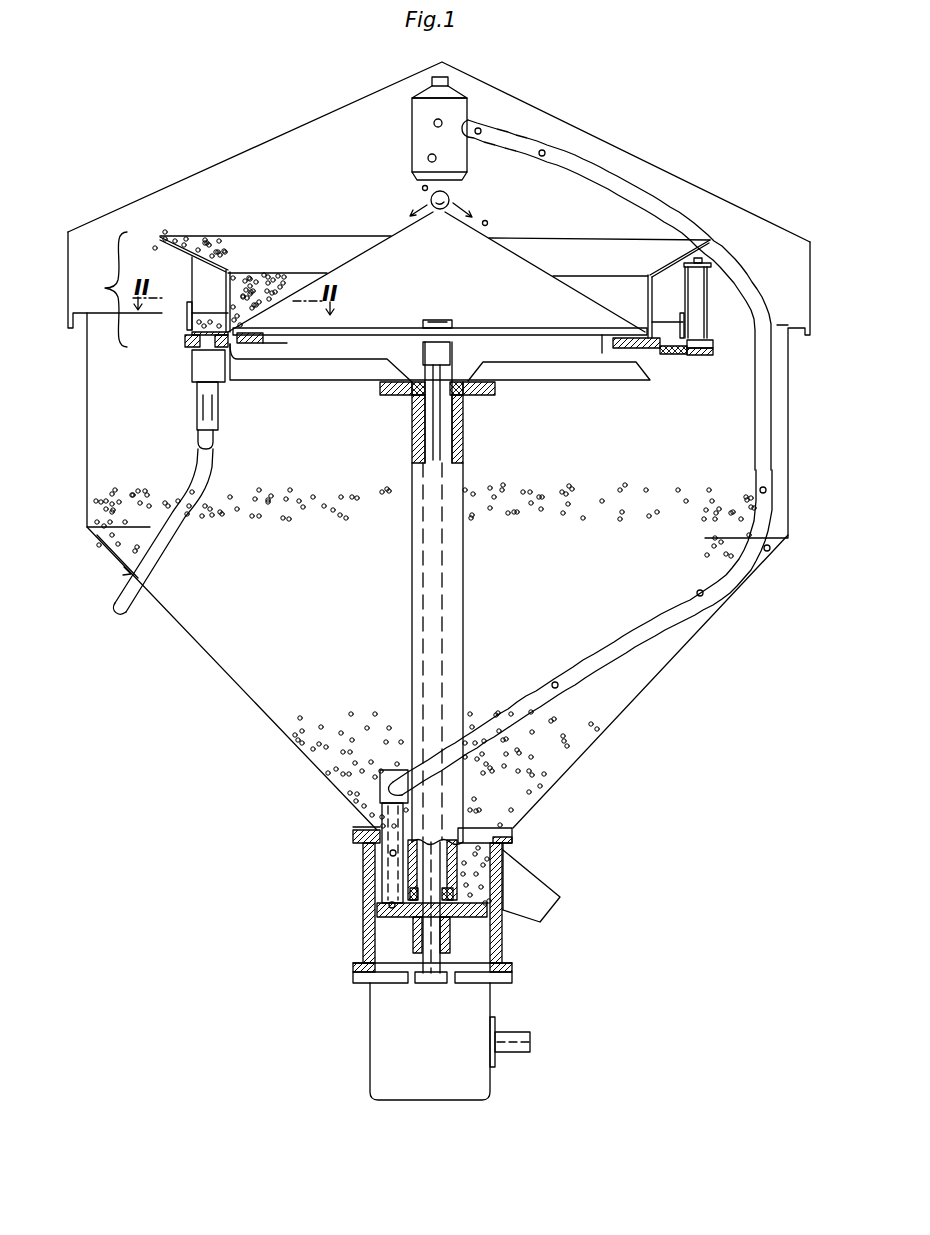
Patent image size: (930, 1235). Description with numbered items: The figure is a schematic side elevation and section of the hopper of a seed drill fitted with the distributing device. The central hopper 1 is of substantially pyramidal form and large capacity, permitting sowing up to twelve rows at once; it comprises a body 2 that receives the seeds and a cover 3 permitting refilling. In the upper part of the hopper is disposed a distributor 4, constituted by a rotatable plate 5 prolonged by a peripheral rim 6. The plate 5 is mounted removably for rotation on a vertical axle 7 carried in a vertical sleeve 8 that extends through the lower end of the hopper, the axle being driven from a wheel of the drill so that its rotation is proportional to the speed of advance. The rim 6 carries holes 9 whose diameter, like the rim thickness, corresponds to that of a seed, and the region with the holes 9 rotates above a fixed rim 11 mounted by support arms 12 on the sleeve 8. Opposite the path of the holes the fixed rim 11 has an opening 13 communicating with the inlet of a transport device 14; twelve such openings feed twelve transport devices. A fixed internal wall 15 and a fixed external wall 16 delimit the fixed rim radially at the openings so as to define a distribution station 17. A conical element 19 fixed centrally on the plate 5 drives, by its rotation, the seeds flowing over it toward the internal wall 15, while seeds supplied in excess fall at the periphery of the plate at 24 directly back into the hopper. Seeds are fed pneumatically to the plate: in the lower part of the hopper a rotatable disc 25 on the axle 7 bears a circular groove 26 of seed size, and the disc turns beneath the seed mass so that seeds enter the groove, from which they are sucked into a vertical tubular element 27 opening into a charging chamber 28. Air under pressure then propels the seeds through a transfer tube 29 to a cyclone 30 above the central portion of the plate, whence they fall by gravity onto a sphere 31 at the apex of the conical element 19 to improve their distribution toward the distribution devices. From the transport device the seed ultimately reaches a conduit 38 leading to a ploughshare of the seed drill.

The central hopper 1 is at (242, 690).
The body 2 is at (86, 518).
The cover 3 is at (642, 157).
The distributor 4 is at (398, 289).
The rotatable plate 5 is at (603, 350).
The peripheral rim 6 is at (187, 335).
The vertical axle 7 is at (440, 430).
The vertical sleeve 8 is at (458, 448).
The holes 9 is at (667, 337).
The fixed rim 11 is at (700, 357).
The support arms 12 is at (590, 372).
The opening 13 is at (666, 357).
The transport device 14 is at (195, 365).
The fixed internal wall 15 is at (652, 293).
The fixed external wall 16 is at (684, 317).
The distribution station 17 is at (200, 330).
The conical element 19 is at (510, 270).
The periphery of rotatable plate 24 is at (693, 253).
The rotatable disc 25 is at (407, 912).
The circular groove 26 is at (470, 913).
The vertical tubular element 27 is at (373, 860).
The charging chamber 28 is at (380, 790).
The transfer tube 29 is at (578, 668).
The cyclone 30 is at (458, 113).
The sphere 31 is at (450, 195).
The conduit 38 is at (151, 589).